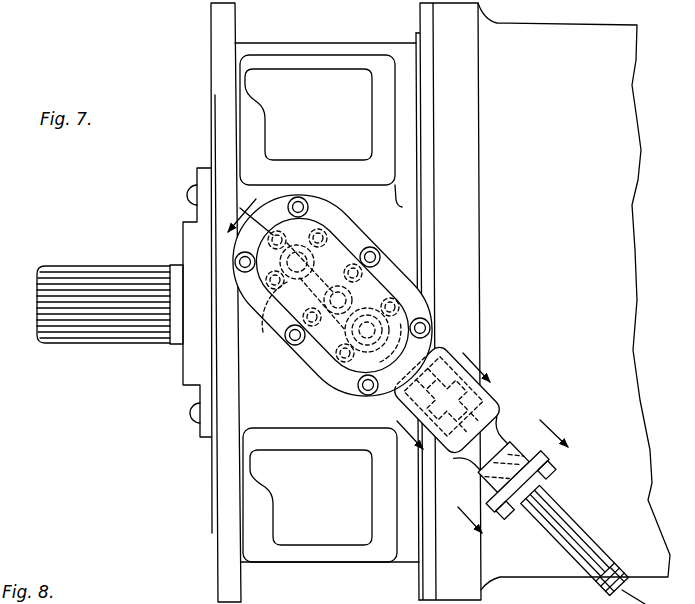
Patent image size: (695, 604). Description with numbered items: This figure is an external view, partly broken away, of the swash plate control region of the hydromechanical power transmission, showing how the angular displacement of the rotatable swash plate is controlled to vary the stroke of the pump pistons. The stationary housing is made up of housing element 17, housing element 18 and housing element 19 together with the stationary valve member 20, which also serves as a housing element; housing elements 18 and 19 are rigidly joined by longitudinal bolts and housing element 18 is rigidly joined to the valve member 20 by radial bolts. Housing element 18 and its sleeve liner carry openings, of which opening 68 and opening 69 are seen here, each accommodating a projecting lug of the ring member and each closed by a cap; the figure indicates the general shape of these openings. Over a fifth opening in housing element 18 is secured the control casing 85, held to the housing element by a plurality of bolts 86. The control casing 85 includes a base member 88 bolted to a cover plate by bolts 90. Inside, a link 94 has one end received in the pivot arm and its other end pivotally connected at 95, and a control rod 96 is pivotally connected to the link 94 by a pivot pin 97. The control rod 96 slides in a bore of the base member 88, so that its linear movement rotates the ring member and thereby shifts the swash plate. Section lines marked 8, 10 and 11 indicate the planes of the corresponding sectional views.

The housing element 17 is at (556, 119).
The housing element 18 is at (211, 33).
The housing element 19 is at (195, 242).
The stationary valve member 20 is at (420, 20).
The opening 68 is at (316, 80).
The opening 69 is at (348, 550).
The control casing 85 is at (370, 240).
The bolts 86 is at (277, 326).
The base member 88 is at (437, 347).
The bolts 90 is at (309, 207).
The link 94 is at (418, 402).
The pivotal connection 95 is at (455, 468).
The control rod 96 is at (584, 535).
The pivot pin 97 is at (418, 466).
The section line 8- 8 is at (443, 394).
The section line 10- 10 is at (513, 477).
The section line 11- 11 is at (447, 405).